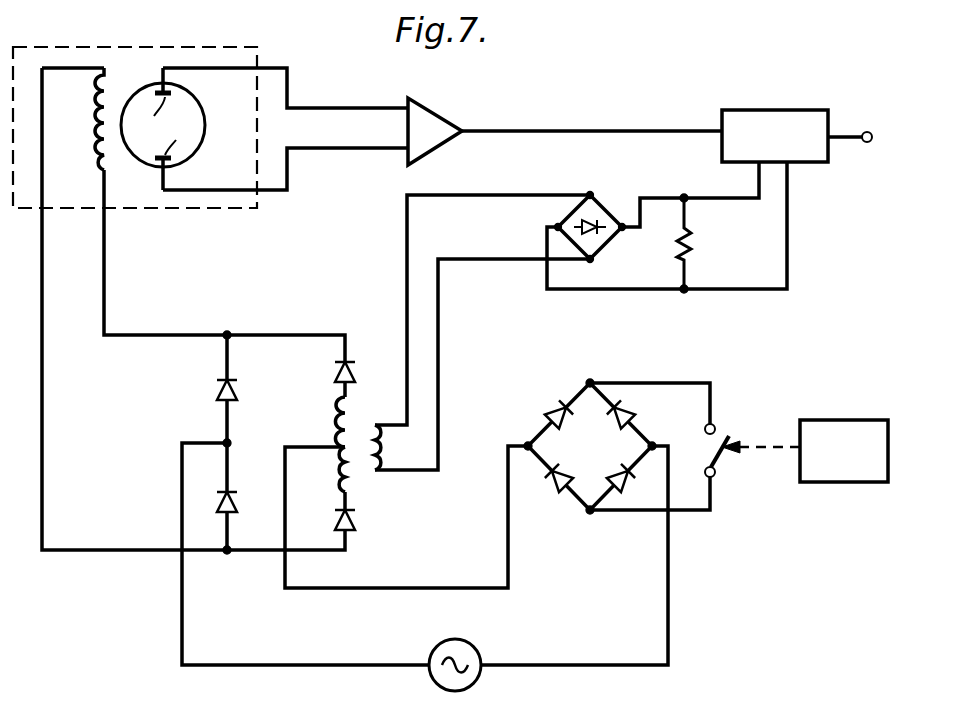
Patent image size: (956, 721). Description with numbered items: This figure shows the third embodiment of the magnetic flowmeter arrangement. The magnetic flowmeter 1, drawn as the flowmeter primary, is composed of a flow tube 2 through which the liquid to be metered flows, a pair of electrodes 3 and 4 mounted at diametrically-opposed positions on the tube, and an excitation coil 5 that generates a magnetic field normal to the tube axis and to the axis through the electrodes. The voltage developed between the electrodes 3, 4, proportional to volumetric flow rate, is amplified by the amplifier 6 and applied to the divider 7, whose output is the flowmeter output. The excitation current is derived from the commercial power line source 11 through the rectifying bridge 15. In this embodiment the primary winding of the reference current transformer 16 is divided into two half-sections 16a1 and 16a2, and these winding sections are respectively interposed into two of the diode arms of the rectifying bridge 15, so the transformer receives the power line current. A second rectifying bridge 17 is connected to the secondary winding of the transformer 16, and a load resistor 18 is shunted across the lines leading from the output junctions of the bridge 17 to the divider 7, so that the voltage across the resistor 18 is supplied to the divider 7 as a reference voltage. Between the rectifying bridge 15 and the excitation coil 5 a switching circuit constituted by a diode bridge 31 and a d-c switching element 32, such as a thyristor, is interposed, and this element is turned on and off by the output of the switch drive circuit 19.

The magnetic flowmeter 1 is at (242, 46).
The flow tube 2 is at (156, 86).
The electrode 3 is at (151, 118).
The electrode 4 is at (173, 136).
The excitation coil 5 is at (97, 123).
The amplifier 6 is at (447, 118).
The divider 7 is at (773, 110).
The commercial power line source 11 is at (471, 646).
The rectifying bridge 15 is at (200, 405).
The current transformer 16 is at (347, 446).
The primary winding half-section 16a1 is at (336, 427).
The primary winding half-section 16a2 is at (337, 463).
The rectifying bridge 17 is at (600, 211).
The load resistor 18 is at (699, 246).
The switch drive circuit 19 is at (853, 420).
The diode bridge 31 is at (572, 498).
The d-c switching element 32 is at (725, 428).